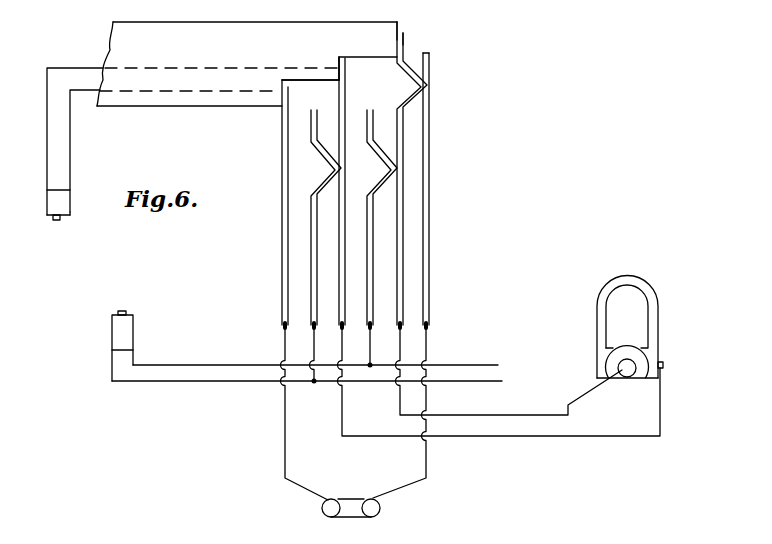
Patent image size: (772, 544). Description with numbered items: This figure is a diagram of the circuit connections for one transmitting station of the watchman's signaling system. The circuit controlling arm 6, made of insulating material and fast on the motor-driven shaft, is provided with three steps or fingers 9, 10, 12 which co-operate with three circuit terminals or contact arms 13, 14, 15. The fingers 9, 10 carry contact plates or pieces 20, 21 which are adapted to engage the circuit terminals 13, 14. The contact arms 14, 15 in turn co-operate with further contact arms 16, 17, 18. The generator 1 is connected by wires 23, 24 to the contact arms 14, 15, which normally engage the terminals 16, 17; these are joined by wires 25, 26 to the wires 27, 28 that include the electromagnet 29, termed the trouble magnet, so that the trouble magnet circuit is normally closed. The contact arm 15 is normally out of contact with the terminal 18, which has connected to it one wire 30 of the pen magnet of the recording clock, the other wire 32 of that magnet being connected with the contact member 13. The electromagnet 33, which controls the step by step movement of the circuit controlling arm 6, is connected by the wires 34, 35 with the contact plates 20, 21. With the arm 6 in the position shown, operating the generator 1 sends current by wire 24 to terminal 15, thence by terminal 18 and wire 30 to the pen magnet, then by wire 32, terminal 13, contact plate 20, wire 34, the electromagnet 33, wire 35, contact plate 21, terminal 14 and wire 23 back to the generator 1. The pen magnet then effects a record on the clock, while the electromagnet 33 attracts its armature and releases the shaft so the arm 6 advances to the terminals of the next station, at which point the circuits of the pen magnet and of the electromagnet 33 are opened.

The generator 1 is at (627, 326).
The circuit controlling arm 6 is at (110, 31).
The finger 9 is at (247, 106).
The finger 10 is at (310, 82).
The finger 12 is at (373, 58).
The contact arm 13 is at (282, 163).
The contact arm 14 is at (346, 98).
The contact arm 15 is at (404, 36).
The contact arm 16 is at (311, 145).
The contact arm 17 is at (369, 146).
The contact arm 18 is at (431, 144).
The contact plate 20 is at (281, 109).
The contact plate 21 is at (338, 83).
The wire 23 is at (598, 437).
The wire 24 is at (529, 415).
The wire 25 is at (313, 342).
The wire 26 is at (369, 344).
The wire 27 is at (220, 382).
The wire 28 is at (315, 352).
The trouble magnet 29 is at (133, 333).
The wire 30 is at (427, 463).
The wire 32 is at (284, 445).
The electromagnet 33 is at (70, 203).
The wire 34 is at (71, 150).
The wire 35 is at (47, 122).